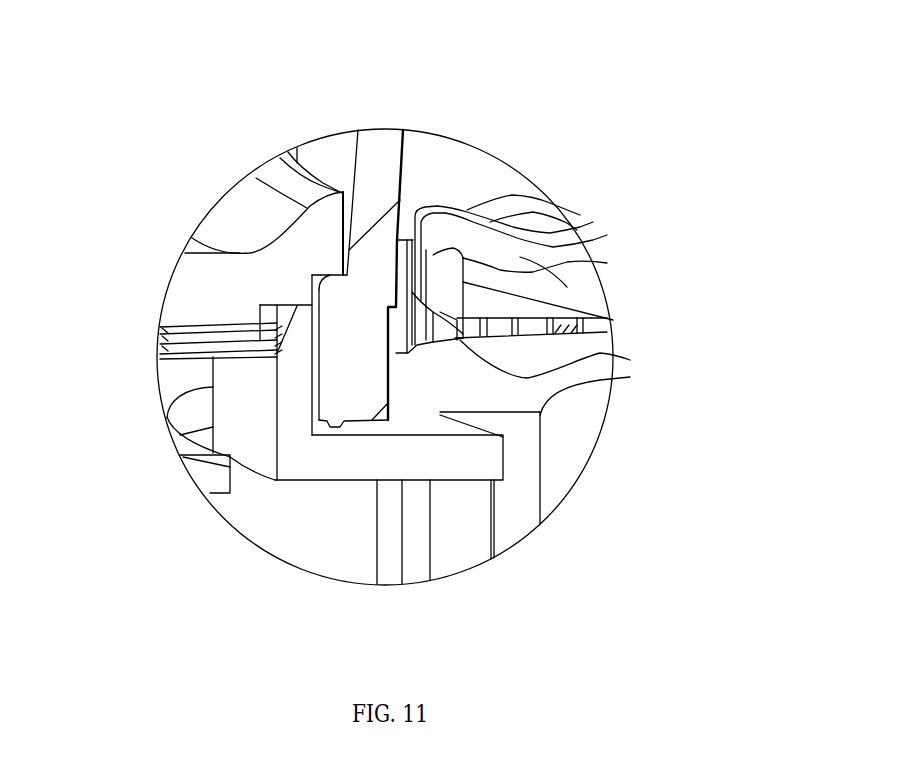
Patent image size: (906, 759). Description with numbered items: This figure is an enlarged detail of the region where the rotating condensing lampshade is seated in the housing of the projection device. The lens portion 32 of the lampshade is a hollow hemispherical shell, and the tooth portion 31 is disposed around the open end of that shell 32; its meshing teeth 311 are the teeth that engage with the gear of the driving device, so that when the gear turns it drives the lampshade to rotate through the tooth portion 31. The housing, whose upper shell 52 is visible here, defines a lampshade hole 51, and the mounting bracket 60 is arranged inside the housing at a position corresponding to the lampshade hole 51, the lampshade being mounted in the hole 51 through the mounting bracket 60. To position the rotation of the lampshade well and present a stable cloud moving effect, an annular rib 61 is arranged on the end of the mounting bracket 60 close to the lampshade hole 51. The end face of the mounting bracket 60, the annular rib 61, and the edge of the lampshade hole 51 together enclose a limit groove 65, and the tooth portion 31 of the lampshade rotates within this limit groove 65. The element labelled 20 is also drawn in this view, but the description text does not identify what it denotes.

The display module 20 is at (567, 287).
The tooth portion 31 is at (356, 400).
The meshing teeth 311 is at (630, 360).
The lens portion 32 is at (387, 147).
The lampshade hole 51 is at (323, 160).
The upper shell 52 is at (238, 212).
The mounting bracket 60 is at (463, 517).
The annular rib 61 is at (283, 372).
The limit groove 65 is at (311, 323).